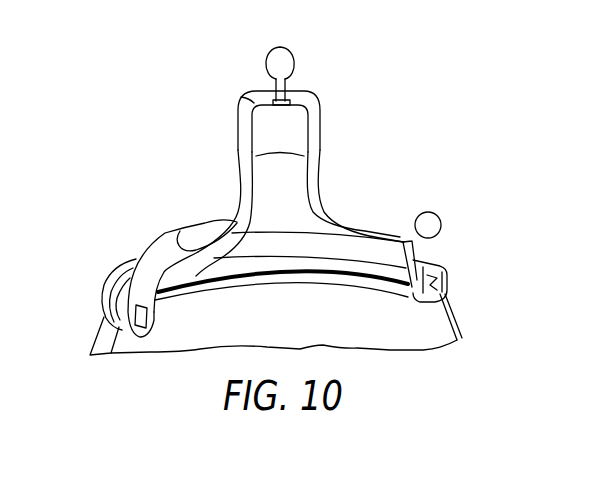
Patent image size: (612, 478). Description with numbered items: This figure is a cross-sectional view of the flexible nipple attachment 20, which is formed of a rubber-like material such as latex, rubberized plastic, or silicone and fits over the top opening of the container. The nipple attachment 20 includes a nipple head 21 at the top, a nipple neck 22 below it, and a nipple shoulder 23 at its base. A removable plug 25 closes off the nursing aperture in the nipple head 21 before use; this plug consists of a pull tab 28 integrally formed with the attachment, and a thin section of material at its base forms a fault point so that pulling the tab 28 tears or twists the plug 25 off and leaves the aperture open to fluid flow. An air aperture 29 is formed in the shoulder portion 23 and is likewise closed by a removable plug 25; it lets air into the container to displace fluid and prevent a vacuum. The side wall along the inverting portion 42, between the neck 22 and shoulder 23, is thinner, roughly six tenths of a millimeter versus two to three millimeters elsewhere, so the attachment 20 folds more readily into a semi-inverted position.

The flexible nipple attachment 20 is at (380, 136).
The nipple head 21 is at (300, 92).
The nipple neck 22 is at (320, 188).
The nipple shoulder 23 is at (157, 245).
The removable plug 25 is at (310, 58).
The pull tab 28 is at (266, 70).
The air aperture 29 is at (401, 215).
The inverting portion 42 is at (235, 212).